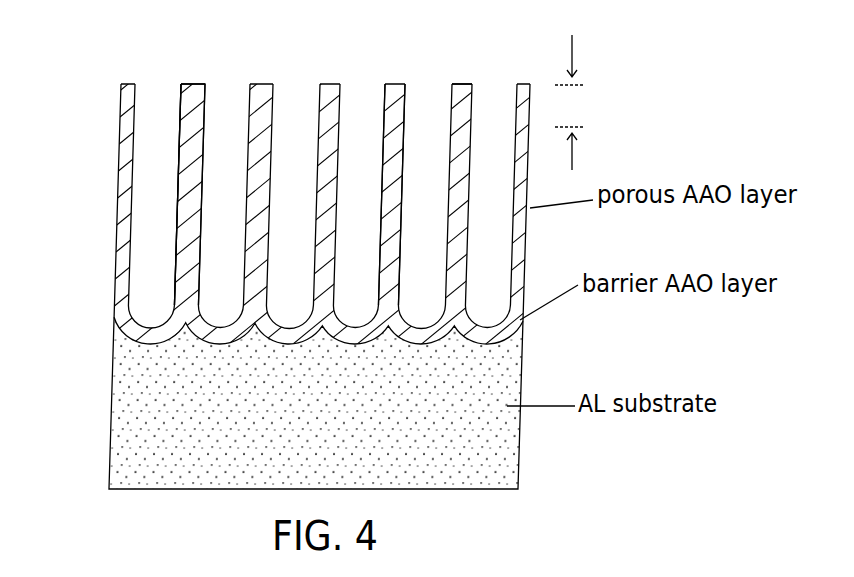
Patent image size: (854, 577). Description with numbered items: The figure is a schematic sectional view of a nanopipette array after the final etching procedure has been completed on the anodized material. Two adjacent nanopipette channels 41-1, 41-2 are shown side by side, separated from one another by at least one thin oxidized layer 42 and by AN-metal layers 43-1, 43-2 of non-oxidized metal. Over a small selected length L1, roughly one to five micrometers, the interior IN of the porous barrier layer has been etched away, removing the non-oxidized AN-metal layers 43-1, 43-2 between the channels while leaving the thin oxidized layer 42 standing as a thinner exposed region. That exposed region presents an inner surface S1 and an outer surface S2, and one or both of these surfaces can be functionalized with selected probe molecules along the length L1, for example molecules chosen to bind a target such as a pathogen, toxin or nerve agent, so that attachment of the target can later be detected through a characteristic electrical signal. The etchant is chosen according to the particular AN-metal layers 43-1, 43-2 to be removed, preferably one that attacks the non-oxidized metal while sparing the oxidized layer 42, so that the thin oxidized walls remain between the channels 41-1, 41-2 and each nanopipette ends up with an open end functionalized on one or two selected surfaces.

The nanopipette channel 41-1 is at (157, 97).
The nanopipette channel 41-2 is at (225, 97).
The oxidized layer 42 is at (194, 92).
The AN-metal layer 43-1 is at (175, 228).
The AN-metal layer 43-2 is at (177, 267).
The inner surface S1 is at (403, 95).
The outer surface S2 is at (383, 95).
The interior of the porous barrier layer IN is at (463, 90).
The selected length L1 is at (570, 102).